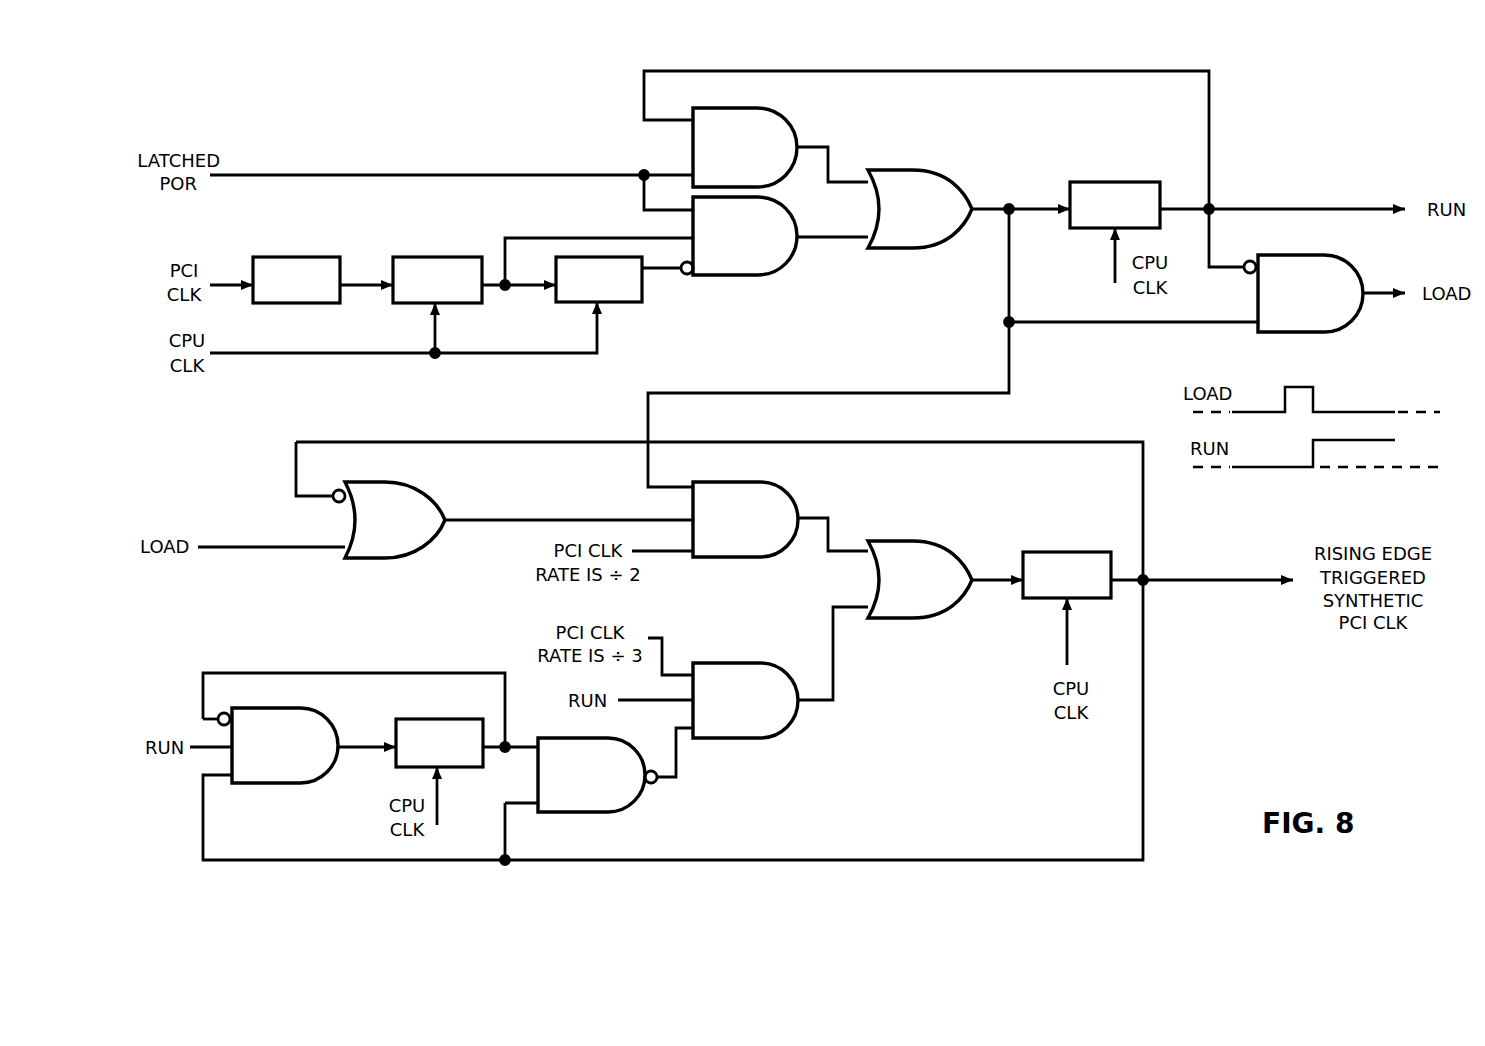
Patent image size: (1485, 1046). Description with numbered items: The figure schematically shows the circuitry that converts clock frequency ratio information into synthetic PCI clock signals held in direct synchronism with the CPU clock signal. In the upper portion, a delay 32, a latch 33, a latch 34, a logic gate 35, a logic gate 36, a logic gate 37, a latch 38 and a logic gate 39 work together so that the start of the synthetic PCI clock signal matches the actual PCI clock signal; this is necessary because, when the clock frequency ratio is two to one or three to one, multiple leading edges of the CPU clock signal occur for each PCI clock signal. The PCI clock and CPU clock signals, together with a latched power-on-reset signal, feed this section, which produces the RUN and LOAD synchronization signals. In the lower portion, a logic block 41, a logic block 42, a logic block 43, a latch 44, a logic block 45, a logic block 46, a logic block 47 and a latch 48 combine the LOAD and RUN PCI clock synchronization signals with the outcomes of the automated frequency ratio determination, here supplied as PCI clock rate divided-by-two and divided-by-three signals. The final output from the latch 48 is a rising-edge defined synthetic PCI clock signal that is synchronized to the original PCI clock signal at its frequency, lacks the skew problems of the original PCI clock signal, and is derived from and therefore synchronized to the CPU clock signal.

The delay 32 is at (302, 257).
The latch 33 is at (427, 257).
The latch 34 is at (625, 302).
The logic gate 35 is at (739, 236).
The logic gate 36 is at (745, 147).
The logic gate 37 is at (920, 209).
The latch 38 is at (1112, 182).
The logic gate 39 is at (1303, 293).
The logic block 41 is at (389, 520).
The logic block 42 is at (745, 519).
The logic block 43 is at (278, 745).
The latch 44 is at (425, 719).
The logic block 45 is at (597, 775).
The logic block 46 is at (745, 700).
The logic block 47 is at (920, 579).
The latch 48 is at (1053, 552).